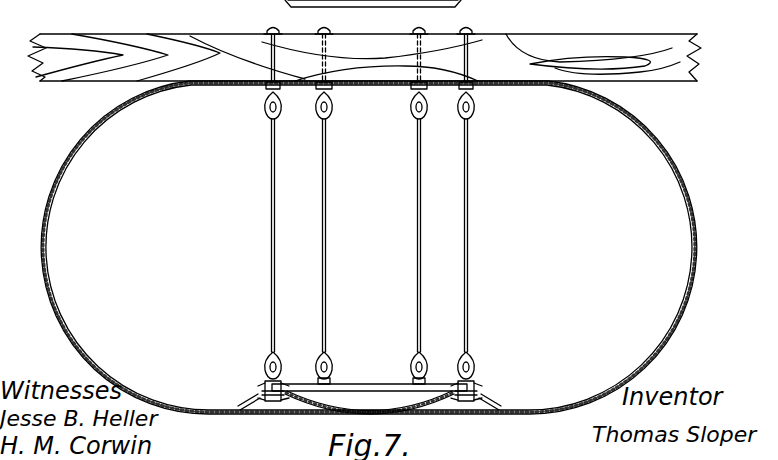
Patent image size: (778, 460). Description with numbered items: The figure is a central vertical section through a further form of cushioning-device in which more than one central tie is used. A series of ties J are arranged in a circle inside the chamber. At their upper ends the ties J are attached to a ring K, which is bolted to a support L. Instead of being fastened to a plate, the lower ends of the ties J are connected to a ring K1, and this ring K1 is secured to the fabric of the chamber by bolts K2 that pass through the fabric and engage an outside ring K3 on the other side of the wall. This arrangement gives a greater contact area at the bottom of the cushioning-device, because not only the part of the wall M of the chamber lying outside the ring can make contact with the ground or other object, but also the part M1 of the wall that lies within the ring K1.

The support L is at (516, 60).
The ring K is at (262, 75).
The ring K1 is at (535, 390).
The bolts K2 is at (469, 397).
The outside ring K3 is at (265, 397).
The ties J is at (468, 303).
The wall of the chamber M is at (178, 410).
The part of the wall within the ring M1 is at (363, 410).